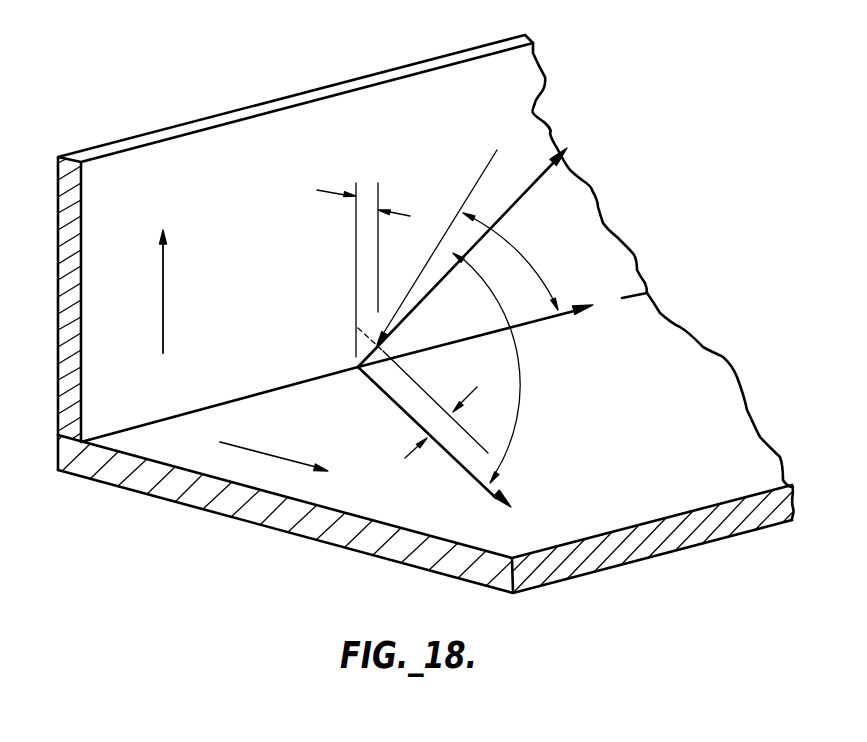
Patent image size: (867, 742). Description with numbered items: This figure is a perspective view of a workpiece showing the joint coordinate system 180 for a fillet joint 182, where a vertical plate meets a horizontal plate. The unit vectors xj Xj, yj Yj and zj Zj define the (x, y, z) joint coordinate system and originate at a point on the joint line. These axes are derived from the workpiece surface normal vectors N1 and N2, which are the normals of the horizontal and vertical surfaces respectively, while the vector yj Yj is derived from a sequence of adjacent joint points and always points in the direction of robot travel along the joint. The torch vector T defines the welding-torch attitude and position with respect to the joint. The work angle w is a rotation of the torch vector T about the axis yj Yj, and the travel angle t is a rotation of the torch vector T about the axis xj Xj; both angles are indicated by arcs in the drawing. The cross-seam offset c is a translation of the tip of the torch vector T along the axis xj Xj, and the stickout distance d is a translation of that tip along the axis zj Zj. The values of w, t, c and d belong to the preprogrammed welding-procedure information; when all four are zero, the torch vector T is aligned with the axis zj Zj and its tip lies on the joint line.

The joint coordinate system 180 is at (353, 408).
The fillet joint 182 is at (245, 343).
The workpiece surface normal vector N1 is at (354, 460).
The workpiece surface normal vector N2 is at (174, 198).
The torch vector T is at (519, 132).
The joint coordinate x-axis vector Xj is at (532, 510).
The joint coordinate y-axis vector Yj is at (612, 293).
The joint coordinate z-axis vector Zj is at (587, 140).
The cross-seam offset c is at (363, 270).
The stickout distance d is at (423, 393).
The travel angle t is at (510, 261).
The work angle w is at (488, 368).